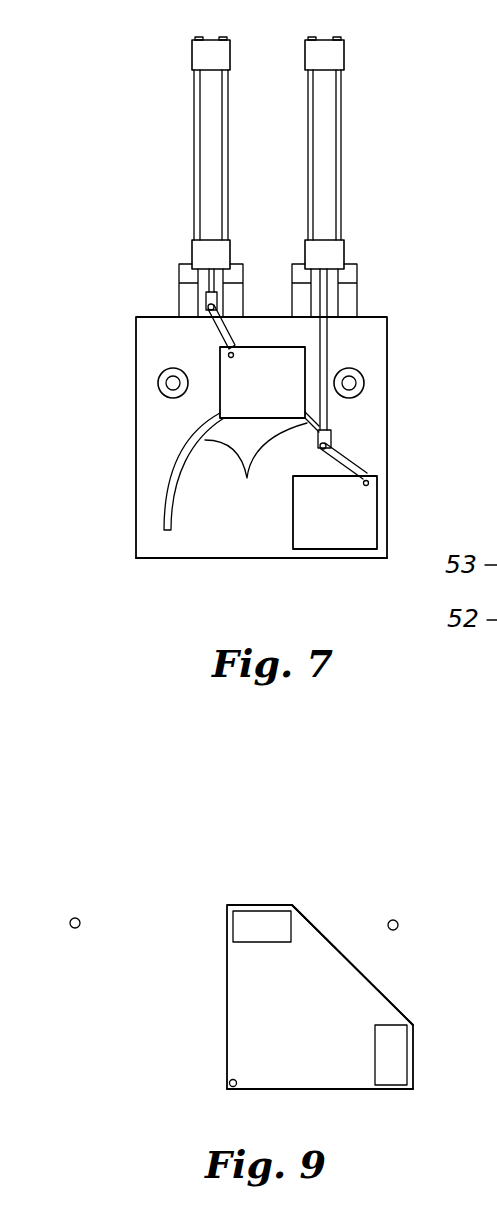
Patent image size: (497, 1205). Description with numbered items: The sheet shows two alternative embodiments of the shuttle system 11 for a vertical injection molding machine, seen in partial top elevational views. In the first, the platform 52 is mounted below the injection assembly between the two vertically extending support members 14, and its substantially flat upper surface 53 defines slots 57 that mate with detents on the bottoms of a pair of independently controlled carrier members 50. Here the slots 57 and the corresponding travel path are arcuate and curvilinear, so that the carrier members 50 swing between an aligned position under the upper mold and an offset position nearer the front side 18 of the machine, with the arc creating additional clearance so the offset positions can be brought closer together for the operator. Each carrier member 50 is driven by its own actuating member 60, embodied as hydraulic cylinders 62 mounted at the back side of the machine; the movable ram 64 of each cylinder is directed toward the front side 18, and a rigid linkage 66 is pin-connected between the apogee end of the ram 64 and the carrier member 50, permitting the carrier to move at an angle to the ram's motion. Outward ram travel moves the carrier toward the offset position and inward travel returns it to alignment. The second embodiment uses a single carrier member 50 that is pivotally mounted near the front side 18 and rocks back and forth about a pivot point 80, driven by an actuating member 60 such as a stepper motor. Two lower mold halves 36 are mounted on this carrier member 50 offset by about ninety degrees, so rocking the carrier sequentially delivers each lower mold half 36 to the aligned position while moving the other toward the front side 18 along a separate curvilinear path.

In FIG. 7, the shuttle system 11 is at (266, 415).
In FIG. 9, the shuttle system 11 is at (288, 965).
In FIG. 7, the support members 14 is at (365, 383).
In FIG. 9, the support members 14 is at (80, 927).
In FIG. 7, the front side 18 is at (257, 560).
In FIG. 9, the front side 18 is at (315, 1090).
In FIG. 9, the lower mold halves 36 is at (248, 928).
In FIG. 7, the carrier members 50 is at (220, 393).
In FIG. 9, the carrier members 50 is at (340, 985).
In FIG. 7, the platform 52 is at (225, 417).
In FIG. 7, the upper surface 53 is at (160, 333).
In FIG. 9, the upper surface 53 is at (250, 1020).
In FIG. 7, the slots 57 is at (235, 471).
In FIG. 7, the actuating member 60 is at (276, 229).
In FIG. 7, the hydraulic cylinders 62 is at (303, 50).
In FIG. 7, the ram 64 is at (327, 335).
In FIG. 7, the rigid linkage 66 is at (347, 455).
In FIG. 9, the pivot point 80 is at (232, 1080).